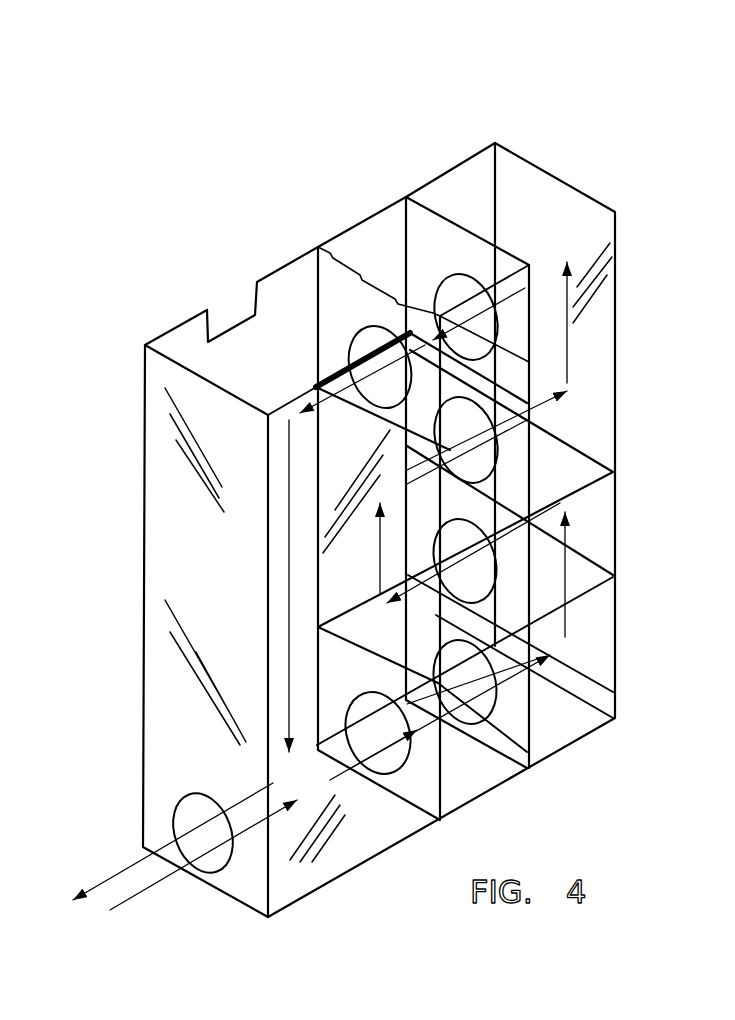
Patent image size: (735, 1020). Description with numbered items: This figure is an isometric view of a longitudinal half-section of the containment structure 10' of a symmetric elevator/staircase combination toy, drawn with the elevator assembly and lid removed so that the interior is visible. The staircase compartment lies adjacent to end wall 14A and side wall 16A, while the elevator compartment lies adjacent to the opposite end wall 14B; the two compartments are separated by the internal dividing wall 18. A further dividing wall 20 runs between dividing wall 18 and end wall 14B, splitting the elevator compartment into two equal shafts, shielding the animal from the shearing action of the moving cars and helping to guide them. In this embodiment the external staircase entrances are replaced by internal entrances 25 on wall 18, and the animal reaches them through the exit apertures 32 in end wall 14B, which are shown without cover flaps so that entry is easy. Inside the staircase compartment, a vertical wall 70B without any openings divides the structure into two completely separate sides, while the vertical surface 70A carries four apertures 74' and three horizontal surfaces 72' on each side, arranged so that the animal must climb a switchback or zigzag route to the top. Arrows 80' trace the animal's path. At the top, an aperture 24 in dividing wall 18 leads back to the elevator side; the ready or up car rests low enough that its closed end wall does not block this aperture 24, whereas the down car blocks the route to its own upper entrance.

The containment structure 10' is at (331, 930).
The end wall 14A is at (547, 193).
The end wall 14B is at (143, 398).
The side wall 16A is at (605, 302).
The internal dividing wall 18 is at (330, 277).
The dividing wall 20 is at (270, 333).
The aperture 24 is at (373, 363).
The entrance 25 is at (410, 758).
The exit aperture 32 is at (170, 810).
The vertical surface 70A is at (422, 223).
The vertical wall 70B is at (463, 182).
The horizontal surface 72' is at (499, 500).
The aperture 74' is at (490, 528).
The flow direction 80' is at (396, 150).